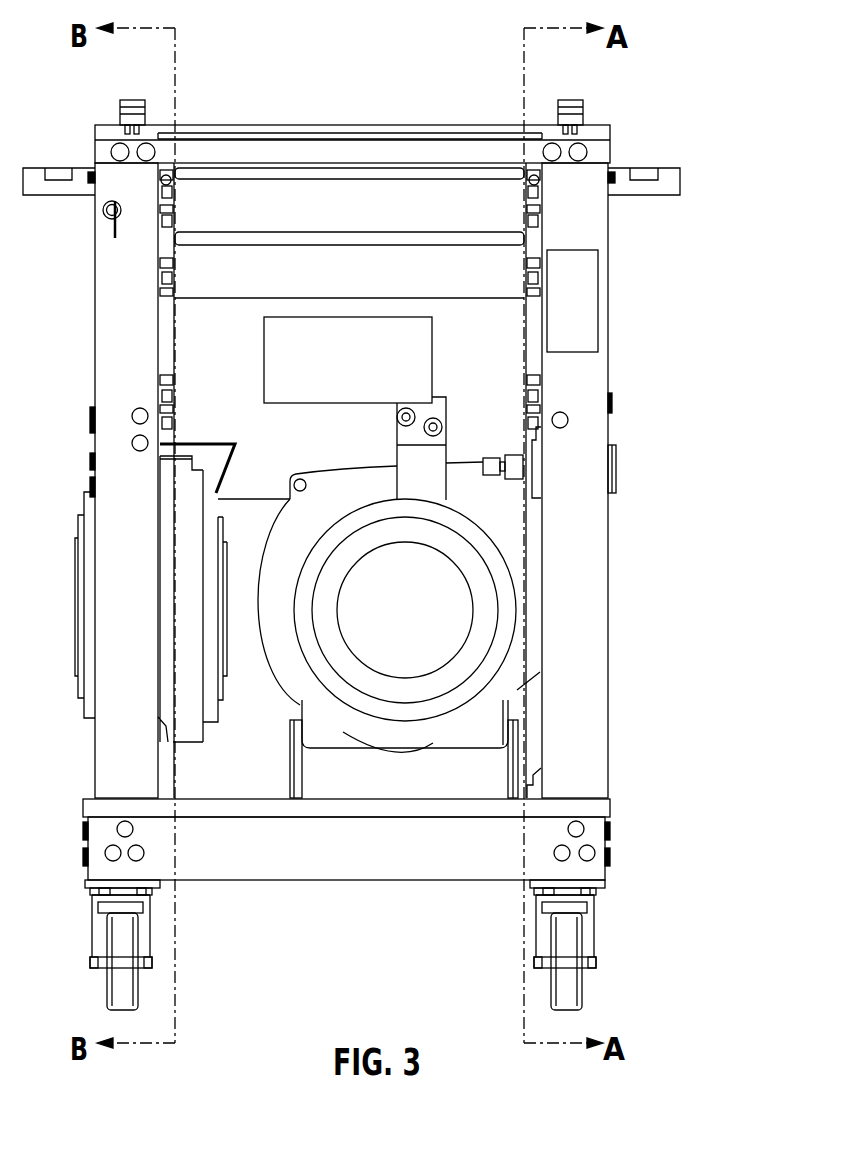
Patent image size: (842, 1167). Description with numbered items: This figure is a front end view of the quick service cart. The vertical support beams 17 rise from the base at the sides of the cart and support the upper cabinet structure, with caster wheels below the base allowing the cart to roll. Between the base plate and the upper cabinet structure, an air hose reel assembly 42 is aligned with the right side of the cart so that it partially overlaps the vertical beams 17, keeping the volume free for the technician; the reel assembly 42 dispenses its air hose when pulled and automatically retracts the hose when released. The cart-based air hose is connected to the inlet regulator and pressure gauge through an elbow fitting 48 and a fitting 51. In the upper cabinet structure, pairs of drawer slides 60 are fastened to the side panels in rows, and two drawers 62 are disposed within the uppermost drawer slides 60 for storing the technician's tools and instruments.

The support beams 17 is at (608, 612).
The air hose reel assembly 42 is at (90, 518).
The elbow fitting 48 is at (515, 479).
The fitting 51 is at (485, 458).
The drawer slides 60 is at (540, 208).
The drawers 62 is at (290, 262).